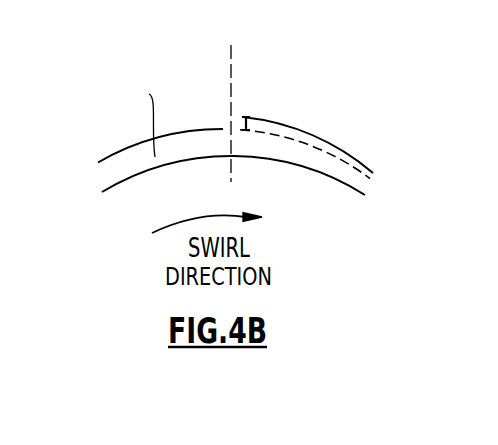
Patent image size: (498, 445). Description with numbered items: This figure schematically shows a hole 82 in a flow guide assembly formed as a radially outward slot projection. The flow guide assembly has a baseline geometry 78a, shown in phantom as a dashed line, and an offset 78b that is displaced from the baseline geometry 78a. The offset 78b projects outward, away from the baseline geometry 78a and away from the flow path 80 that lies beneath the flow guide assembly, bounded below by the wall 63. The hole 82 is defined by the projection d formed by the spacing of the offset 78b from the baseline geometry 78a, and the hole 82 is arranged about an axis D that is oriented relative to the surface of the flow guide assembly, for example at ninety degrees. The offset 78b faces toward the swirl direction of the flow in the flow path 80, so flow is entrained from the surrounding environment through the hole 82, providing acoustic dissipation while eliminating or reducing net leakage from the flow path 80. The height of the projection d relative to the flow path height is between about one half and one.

The inner wall 63 is at (328, 180).
The baseline geometry 78a is at (110, 153).
The offset 78b is at (357, 160).
The flow path 80 is at (138, 120).
The hole 82 is at (219, 107).
The axis D is at (230, 100).
The projection d is at (248, 119).